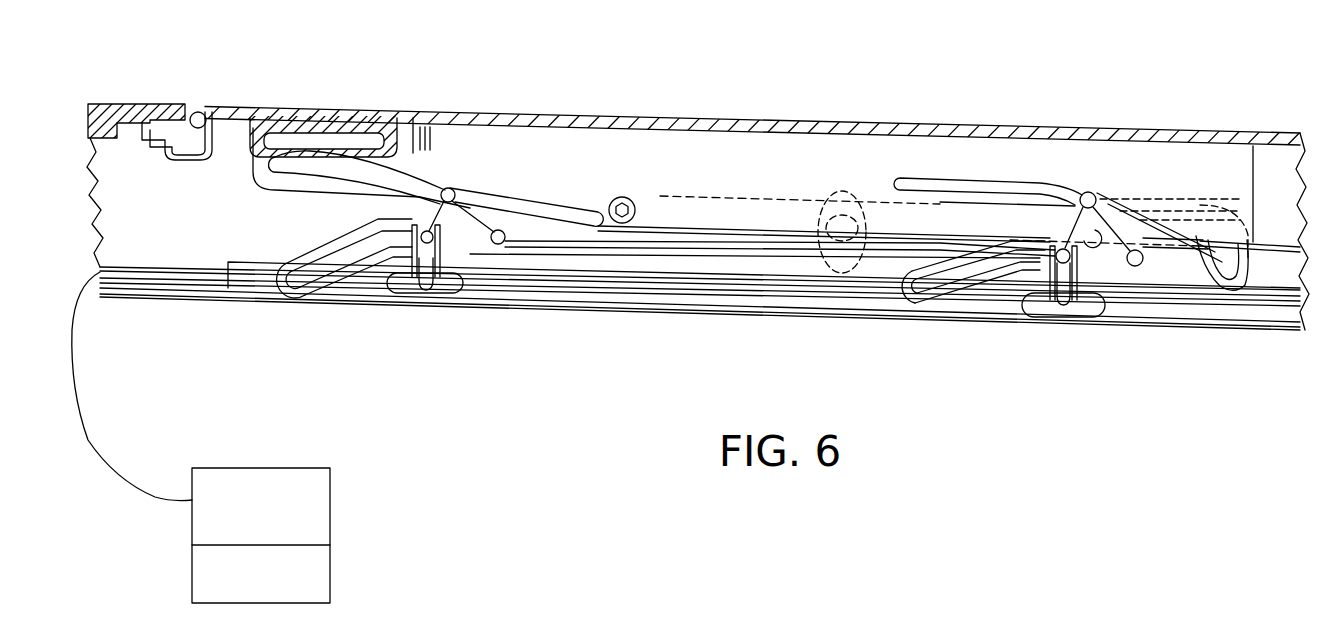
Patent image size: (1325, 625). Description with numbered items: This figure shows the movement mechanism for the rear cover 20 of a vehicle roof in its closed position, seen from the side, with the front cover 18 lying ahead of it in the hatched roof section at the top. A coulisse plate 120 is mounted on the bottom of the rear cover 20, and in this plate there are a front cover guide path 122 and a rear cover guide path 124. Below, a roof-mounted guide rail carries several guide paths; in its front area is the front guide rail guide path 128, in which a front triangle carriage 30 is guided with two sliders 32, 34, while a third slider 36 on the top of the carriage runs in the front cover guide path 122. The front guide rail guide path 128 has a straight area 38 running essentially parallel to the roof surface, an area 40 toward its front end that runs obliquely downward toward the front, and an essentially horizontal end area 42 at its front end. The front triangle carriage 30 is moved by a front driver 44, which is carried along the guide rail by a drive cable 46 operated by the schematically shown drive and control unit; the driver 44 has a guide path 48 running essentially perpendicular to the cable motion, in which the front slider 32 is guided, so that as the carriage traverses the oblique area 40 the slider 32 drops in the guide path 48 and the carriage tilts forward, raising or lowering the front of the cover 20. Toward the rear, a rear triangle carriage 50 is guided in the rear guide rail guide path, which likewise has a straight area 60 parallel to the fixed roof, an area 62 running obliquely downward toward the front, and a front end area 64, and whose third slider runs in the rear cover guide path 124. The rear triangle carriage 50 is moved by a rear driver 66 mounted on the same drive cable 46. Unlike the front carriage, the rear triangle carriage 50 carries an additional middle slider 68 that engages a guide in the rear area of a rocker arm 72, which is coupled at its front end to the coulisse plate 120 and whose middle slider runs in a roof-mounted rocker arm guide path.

The front cover 18 is at (143, 103).
The rear cover 20 is at (607, 118).
The front triangle carriage 30 is at (470, 205).
The front slider 32 is at (424, 243).
The slider 34 is at (499, 246).
The pivot pin 36 is at (448, 188).
The straight area 38 is at (630, 248).
The obliquely downward area 40 is at (337, 262).
The horizontal end area 42 is at (283, 283).
The front driver 44 is at (454, 290).
The drive cable 46 is at (196, 280).
The guide path 48 is at (420, 267).
The rear triangle carriage 50 is at (1130, 246).
The straight area 60 is at (1280, 263).
The obliquely downward area 62 is at (967, 272).
The front end area 64 is at (911, 290).
The rear driver 66 is at (1037, 305).
The middle slider 68 is at (1072, 194).
The rocker arm 72 is at (760, 218).
The coulisse plate 120 is at (700, 150).
The front cover guide path 122 is at (290, 150).
The rear cover guide path 124 is at (933, 178).
The front guide rail guide path 128 is at (571, 262).